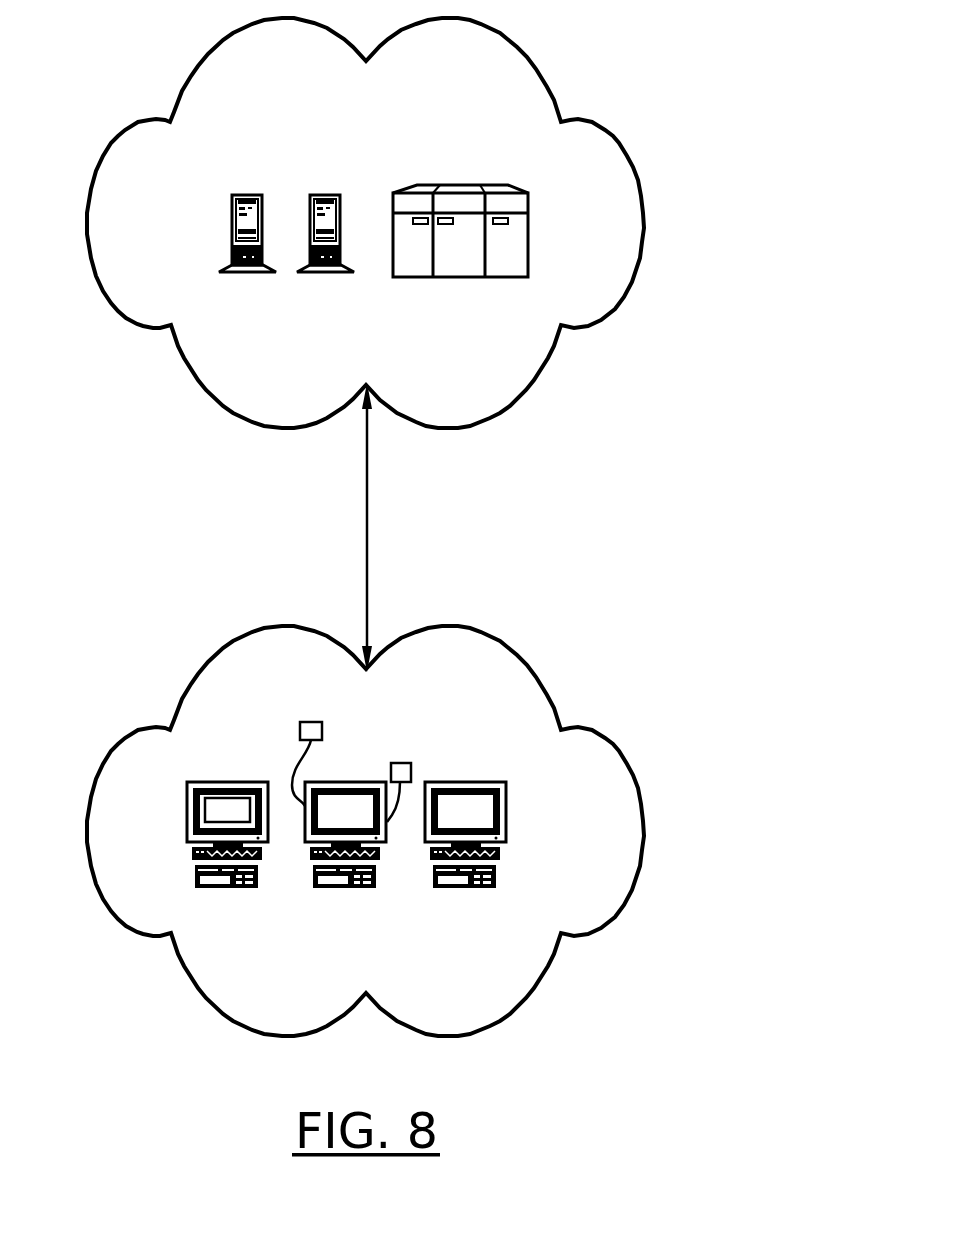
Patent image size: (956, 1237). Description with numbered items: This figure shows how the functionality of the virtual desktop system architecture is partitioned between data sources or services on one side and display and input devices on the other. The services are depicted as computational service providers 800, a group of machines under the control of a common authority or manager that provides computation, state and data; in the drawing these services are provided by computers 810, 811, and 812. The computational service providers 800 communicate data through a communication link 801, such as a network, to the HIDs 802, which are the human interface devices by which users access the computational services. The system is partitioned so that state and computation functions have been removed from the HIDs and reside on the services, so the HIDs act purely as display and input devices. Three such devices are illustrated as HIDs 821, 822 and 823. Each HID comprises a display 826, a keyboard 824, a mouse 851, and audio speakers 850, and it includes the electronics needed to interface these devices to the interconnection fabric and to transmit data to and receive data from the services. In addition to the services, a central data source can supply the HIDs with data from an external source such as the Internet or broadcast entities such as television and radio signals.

The computational service providers 800 is at (686, 224).
The communication link 801 is at (466, 508).
The HIDs 802 is at (686, 826).
The computer 810 is at (247, 250).
The computer 811 is at (325, 250).
The computer 812 is at (460, 245).
The HID 821 is at (242, 819).
The HID 822 is at (345, 852).
The HID 823 is at (465, 852).
The keyboard 824 is at (279, 880).
The display 826 is at (227, 811).
The audio speakers 850 is at (400, 763).
The mouse 851 is at (313, 722).